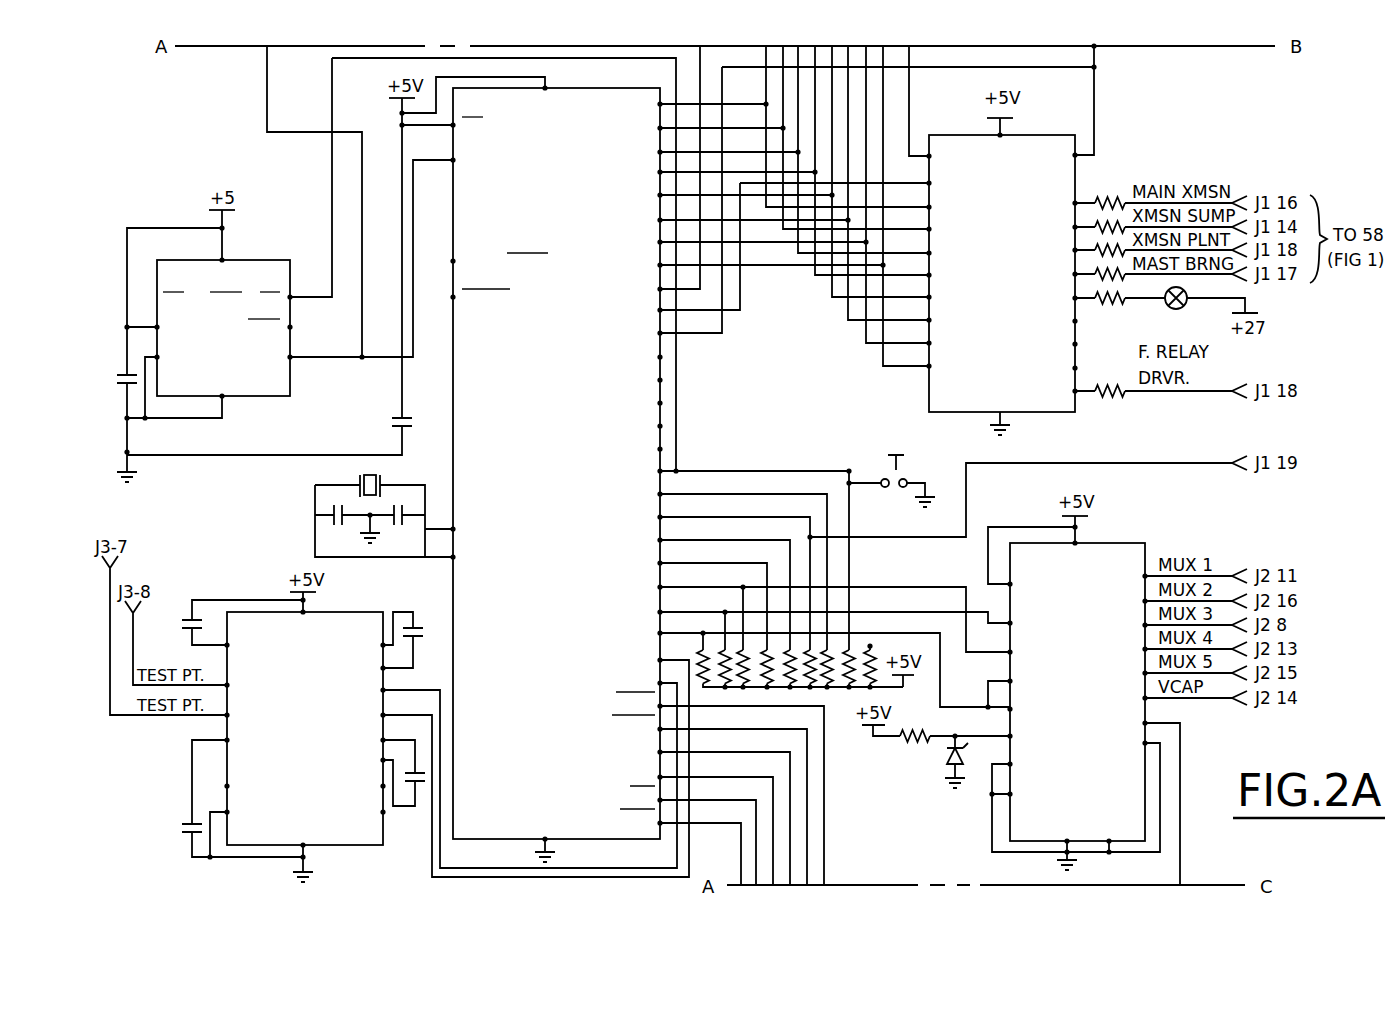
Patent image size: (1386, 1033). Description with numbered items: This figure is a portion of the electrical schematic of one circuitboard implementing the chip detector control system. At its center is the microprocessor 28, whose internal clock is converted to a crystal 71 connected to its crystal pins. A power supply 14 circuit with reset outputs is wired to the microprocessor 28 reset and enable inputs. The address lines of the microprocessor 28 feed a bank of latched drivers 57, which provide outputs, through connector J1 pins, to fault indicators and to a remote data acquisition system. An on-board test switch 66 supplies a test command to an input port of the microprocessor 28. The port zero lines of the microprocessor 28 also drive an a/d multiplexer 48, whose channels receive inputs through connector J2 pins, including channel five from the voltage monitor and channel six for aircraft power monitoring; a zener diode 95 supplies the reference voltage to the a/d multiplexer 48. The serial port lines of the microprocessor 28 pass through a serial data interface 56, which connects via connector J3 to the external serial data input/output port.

The power supply 14 is at (270, 250).
The microprocessor 28 is at (520, 455).
The latched drivers 57 is at (1082, 171).
The on-board test switch 66 is at (884, 446).
The a/d multiplexer 48 is at (1146, 541).
The serial data interface 56 is at (178, 794).
The crystal 71 is at (328, 479).
The zener diode 95 is at (946, 760).